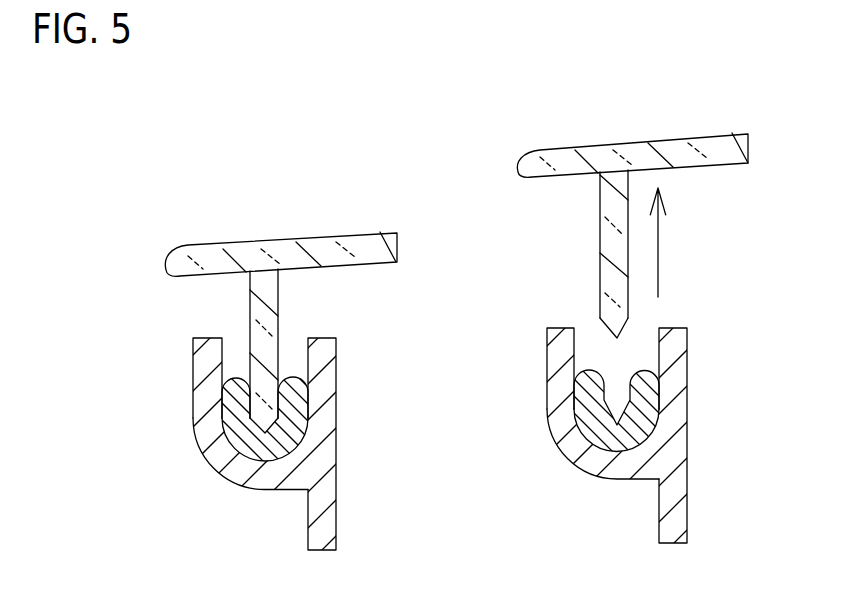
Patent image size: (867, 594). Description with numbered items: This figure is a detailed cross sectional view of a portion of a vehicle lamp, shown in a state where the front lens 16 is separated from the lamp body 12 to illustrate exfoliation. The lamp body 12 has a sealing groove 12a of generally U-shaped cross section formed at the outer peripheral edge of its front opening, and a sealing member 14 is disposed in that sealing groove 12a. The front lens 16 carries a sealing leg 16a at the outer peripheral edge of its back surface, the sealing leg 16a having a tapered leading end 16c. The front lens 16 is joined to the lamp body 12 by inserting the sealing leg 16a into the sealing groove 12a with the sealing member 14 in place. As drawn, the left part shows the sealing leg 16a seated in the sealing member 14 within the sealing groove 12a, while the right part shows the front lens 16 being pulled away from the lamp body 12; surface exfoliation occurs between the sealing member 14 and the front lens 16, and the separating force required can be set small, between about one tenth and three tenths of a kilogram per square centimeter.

The lamp body 12 is at (433, 452).
The sealing groove 12a is at (232, 465).
The sealing member 14 is at (237, 418).
The front lens 16 is at (419, 301).
The sealing leg 16a is at (359, 321).
The tapered leading end 16c is at (240, 436).